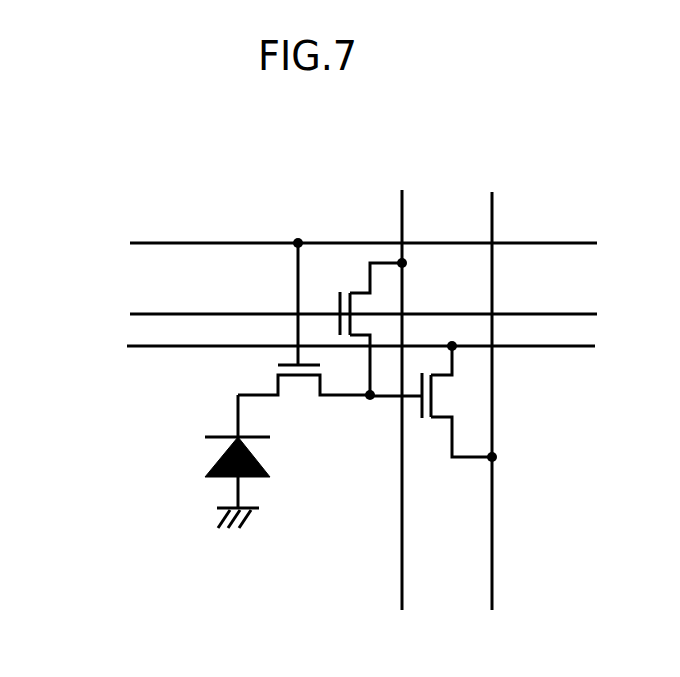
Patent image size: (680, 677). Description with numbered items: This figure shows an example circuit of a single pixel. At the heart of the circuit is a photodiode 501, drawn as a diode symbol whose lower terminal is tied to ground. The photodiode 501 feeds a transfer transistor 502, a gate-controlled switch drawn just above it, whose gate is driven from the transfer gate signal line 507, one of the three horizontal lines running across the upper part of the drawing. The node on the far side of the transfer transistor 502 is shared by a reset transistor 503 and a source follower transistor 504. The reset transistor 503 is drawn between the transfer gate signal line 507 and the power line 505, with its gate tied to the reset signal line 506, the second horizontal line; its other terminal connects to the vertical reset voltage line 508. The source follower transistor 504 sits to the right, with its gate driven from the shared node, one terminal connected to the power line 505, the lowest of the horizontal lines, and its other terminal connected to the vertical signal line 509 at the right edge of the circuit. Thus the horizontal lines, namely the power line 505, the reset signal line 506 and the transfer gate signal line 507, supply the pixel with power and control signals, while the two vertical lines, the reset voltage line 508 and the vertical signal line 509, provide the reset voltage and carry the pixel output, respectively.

The photodiode 501 is at (220, 457).
The transfer transistor 502 is at (278, 377).
The reset transistor 503 is at (361, 290).
The source follower transistor 504 is at (440, 418).
The power line 505 is at (153, 346).
The reset signal line 506 is at (155, 314).
The transfer gate signal line 507 is at (155, 243).
The reset voltage line 508 is at (403, 210).
The vertical signal line 509 is at (492, 210).